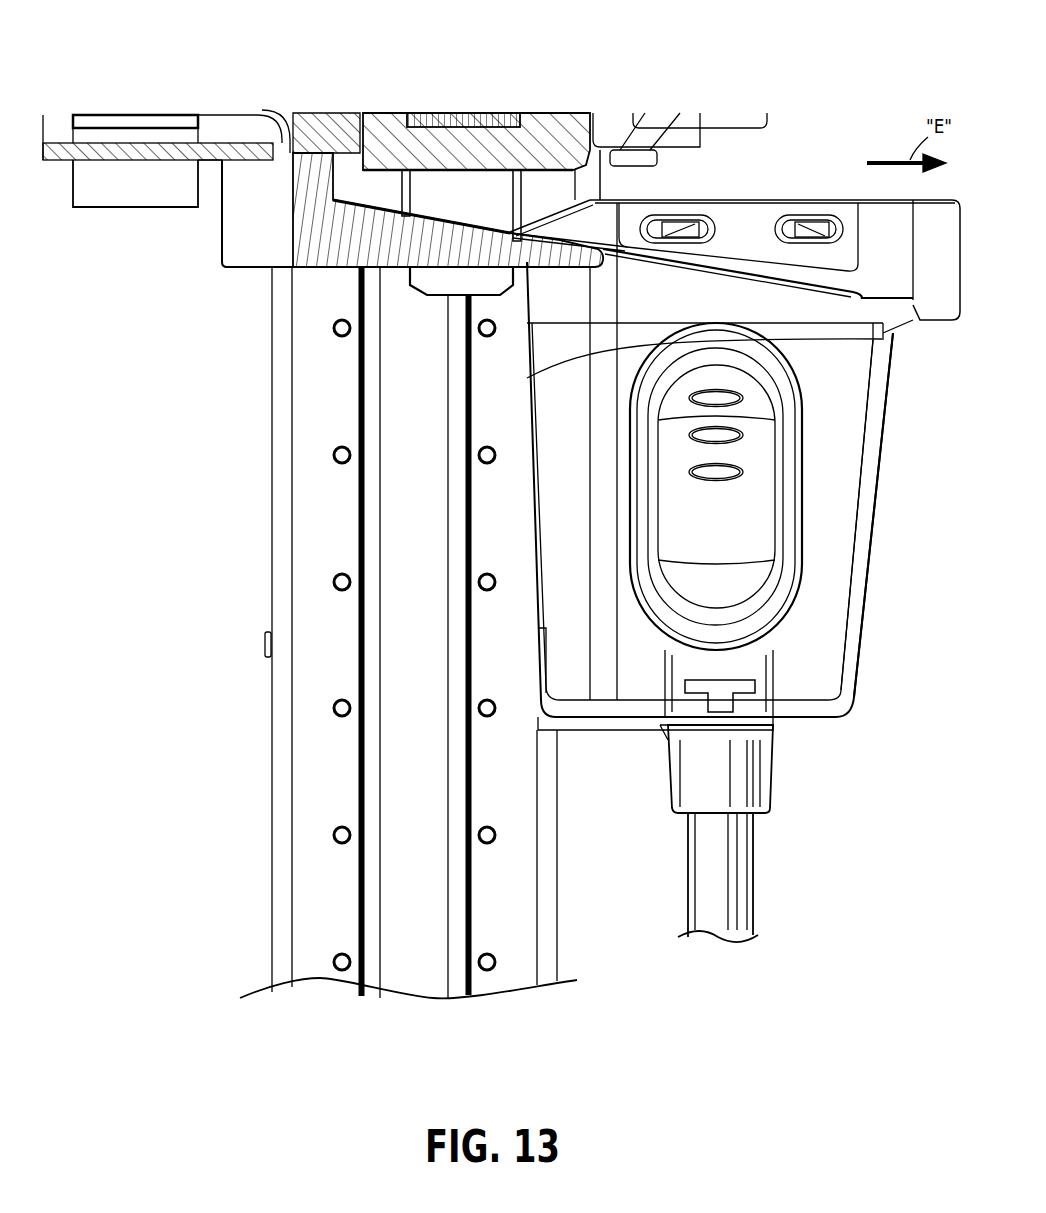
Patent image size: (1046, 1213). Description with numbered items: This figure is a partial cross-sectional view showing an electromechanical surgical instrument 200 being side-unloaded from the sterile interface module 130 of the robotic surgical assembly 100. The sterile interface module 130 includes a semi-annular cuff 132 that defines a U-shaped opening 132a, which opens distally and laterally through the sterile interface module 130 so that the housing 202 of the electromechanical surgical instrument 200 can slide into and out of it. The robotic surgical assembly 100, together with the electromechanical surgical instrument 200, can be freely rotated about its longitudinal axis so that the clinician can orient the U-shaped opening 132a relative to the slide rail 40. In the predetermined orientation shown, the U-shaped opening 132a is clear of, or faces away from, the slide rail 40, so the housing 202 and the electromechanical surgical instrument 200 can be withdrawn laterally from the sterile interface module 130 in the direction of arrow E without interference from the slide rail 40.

The robotic surgical assembly 100 is at (99, 80).
The sterile interface module 130 is at (210, 246).
The semi-annular cuff 132 is at (375, 243).
The U-shaped opening 132a is at (615, 181).
The slide rail 40 is at (302, 530).
The electromechanical surgical instrument 200 is at (522, 498).
The housing 202 is at (864, 502).